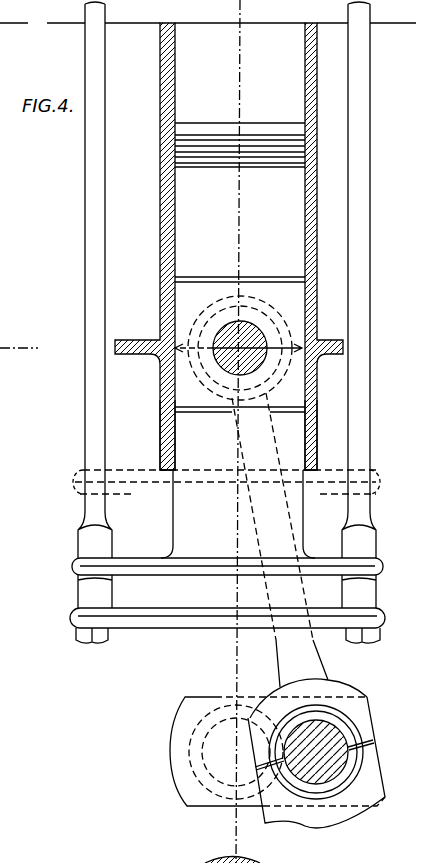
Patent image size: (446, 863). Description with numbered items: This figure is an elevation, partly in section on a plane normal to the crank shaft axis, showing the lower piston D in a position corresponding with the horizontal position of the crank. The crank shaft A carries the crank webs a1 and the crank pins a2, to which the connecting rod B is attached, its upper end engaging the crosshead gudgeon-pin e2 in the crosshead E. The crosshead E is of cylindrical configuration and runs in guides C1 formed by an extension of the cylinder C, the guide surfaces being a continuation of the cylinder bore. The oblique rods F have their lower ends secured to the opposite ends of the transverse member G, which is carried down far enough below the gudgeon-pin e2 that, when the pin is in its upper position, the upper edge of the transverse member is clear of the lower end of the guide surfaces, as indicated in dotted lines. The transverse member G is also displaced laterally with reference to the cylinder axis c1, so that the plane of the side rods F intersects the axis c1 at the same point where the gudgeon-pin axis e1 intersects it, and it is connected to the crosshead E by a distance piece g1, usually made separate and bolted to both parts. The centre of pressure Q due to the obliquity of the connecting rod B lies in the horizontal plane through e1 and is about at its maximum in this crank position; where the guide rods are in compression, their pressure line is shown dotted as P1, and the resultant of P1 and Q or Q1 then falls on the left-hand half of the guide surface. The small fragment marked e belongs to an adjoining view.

The guides C1 is at (238, 14).
The axis of the cylinder c1 is at (221, 646).
The oblique rods F is at (88, 261).
The cylinder C is at (160, 240).
The lower piston D is at (185, 197).
The crosshead E is at (291, 298).
The crosshead gudgeon-pin e2 is at (228, 338).
The axis of the gudgeon-pin e1 is at (133, 338).
The centre of pressure due to the obliquity of the connecting rod Q is at (276, 350).
The centre of pressure due to the obliquity of the connecting rod (reverse direction Q1 is at (212, 355).
The connecting rod B is at (260, 310).
The crank shaft A is at (202, 755).
The crank webs a1 is at (183, 792).
The crank pins a2 is at (327, 765).
The transverse member G is at (72, 488).
The distance piece g1 is at (185, 522).
The line of pressure due to obliquity of side rods in compression P1 is at (255, 841).
The adjacent figure element e is at (304, 856).